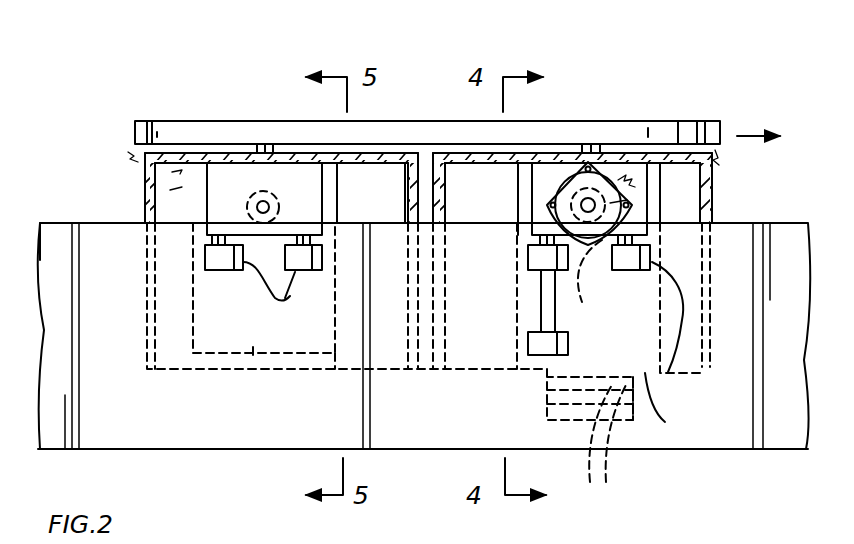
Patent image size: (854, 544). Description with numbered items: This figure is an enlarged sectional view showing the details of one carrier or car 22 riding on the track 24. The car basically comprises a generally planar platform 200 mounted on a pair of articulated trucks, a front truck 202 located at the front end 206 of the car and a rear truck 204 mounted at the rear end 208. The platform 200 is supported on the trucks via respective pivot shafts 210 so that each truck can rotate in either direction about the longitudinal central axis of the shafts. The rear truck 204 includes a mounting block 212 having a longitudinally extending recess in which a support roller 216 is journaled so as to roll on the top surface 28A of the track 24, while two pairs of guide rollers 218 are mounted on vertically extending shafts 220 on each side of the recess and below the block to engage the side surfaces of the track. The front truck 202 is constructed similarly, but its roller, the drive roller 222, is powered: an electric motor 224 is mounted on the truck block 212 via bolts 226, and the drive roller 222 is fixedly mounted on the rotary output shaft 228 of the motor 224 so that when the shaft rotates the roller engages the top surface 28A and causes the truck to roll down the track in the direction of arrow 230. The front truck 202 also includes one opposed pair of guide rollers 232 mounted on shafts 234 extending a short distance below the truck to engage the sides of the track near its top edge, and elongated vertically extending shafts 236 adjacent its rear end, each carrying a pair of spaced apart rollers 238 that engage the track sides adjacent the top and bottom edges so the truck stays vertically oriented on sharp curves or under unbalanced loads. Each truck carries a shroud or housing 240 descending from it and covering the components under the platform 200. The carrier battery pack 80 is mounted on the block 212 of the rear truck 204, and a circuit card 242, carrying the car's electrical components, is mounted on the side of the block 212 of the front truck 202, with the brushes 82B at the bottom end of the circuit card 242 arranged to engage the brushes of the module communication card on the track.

The car 22 is at (648, 82).
The track 24 is at (190, 430).
The top surface of the track 28A is at (100, 182).
The carrier battery pack 80 is at (252, 360).
The brushes 82B is at (591, 439).
The platform 200 is at (664, 98).
The front truck 202 is at (682, 171).
The rear truck 204 is at (222, 201).
The front end 206 is at (702, 124).
The rear end 208 is at (153, 121).
The pivot shaft 210 is at (590, 153).
The mounting block 212 is at (207, 237).
The support roller 216 is at (247, 192).
The guide rollers 218 is at (293, 278).
The vertically extending shafts 220 is at (312, 243).
The drive roller 222 is at (682, 193).
The electric motor 224 is at (592, 212).
The bolts 226 is at (550, 202).
The rotary output shaft 228 is at (603, 287).
The arrow 230 is at (753, 134).
The guide rollers 232 is at (650, 386).
The shafts 234 is at (645, 242).
The elongated vertically extending shafts 236 is at (548, 240).
The rollers 238 is at (534, 258).
The shroud 240 is at (146, 175).
The circuit card 242 is at (679, 408).